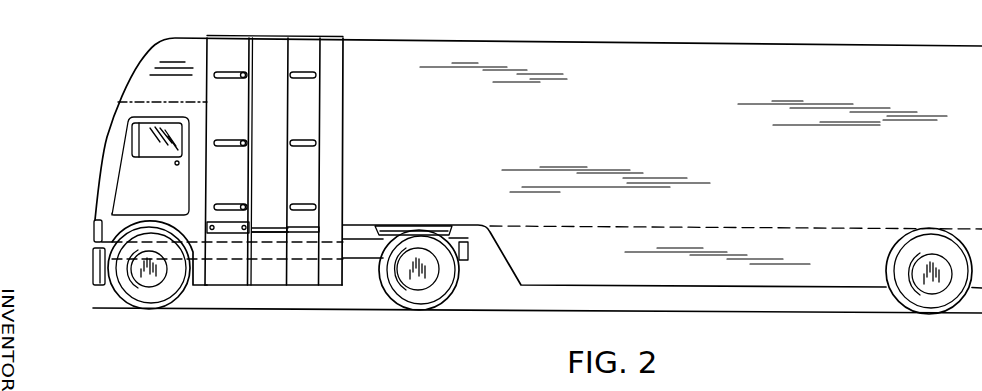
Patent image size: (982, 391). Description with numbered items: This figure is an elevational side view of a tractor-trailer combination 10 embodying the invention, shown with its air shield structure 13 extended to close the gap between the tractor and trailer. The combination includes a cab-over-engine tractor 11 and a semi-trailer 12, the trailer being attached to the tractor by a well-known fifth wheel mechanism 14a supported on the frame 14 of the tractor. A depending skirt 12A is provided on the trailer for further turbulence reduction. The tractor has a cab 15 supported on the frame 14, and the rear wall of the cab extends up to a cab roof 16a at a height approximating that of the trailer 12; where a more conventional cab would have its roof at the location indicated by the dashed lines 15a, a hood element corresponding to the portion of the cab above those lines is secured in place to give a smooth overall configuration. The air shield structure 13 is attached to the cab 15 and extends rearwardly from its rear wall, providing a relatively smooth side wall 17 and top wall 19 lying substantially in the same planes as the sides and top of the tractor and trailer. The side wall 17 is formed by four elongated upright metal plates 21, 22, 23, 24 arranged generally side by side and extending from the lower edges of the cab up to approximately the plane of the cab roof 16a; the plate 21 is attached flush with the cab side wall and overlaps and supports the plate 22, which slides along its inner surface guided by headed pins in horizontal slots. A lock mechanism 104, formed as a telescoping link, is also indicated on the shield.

The tractor-trailer combination 10 is at (189, 316).
The tractor 11 is at (88, 256).
The semi-trailer 12 is at (488, 141).
The depending skirt 12A is at (792, 277).
The air shield structure 13 is at (268, 60).
The frame 14 is at (338, 252).
The fifth wheel mechanism 14a is at (468, 242).
The cab 15 is at (106, 143).
The dashed lines 15a is at (147, 100).
The cab roof 16a is at (178, 37).
The side wall 17 is at (236, 111).
The top wall 19 is at (290, 36).
The plate 21 is at (233, 200).
The plate 22 is at (268, 169).
The plate 23 is at (302, 195).
The plate 24 is at (335, 161).
The lock mechanism 104 is at (265, 226).